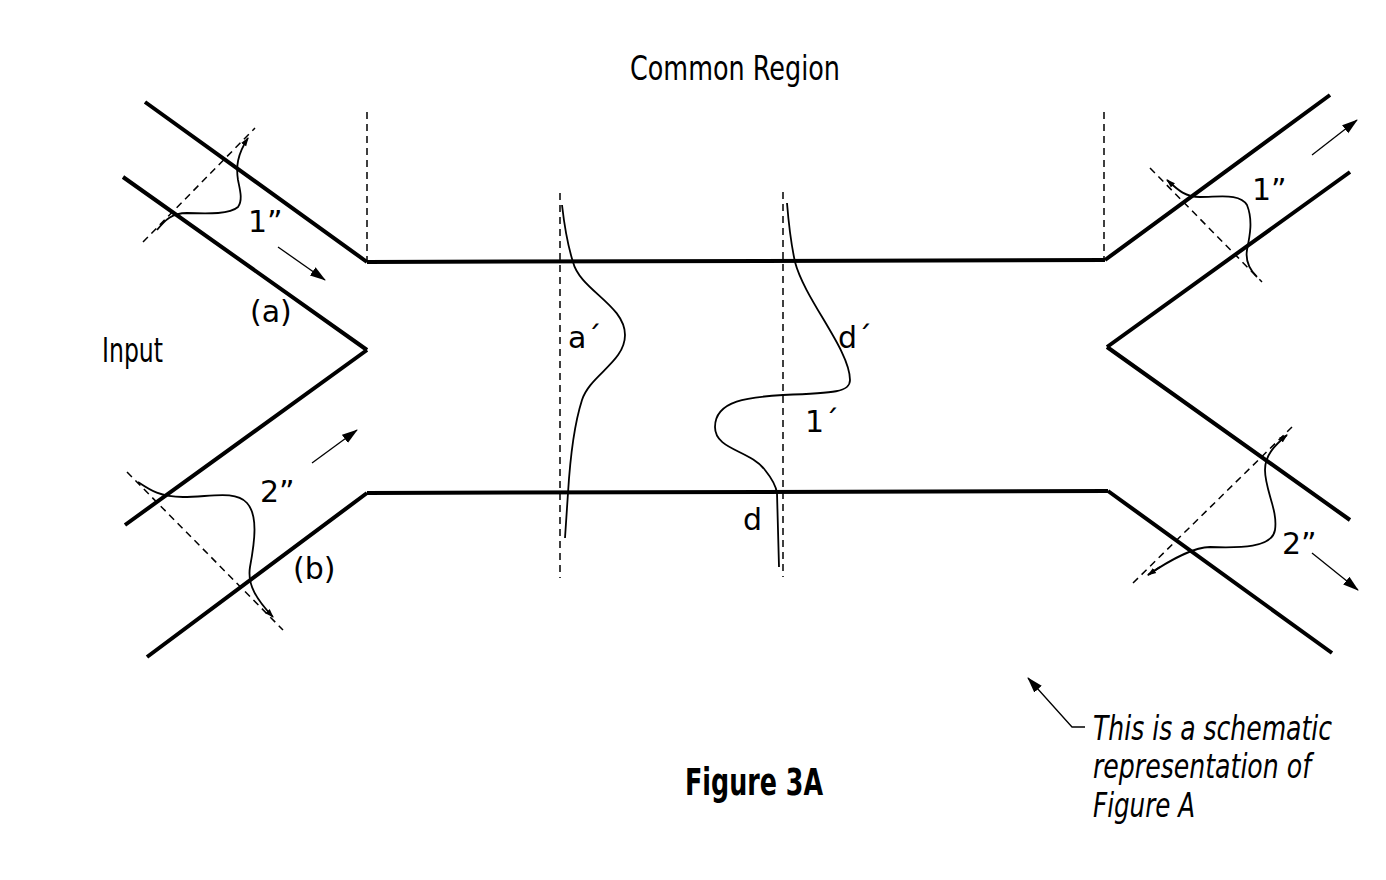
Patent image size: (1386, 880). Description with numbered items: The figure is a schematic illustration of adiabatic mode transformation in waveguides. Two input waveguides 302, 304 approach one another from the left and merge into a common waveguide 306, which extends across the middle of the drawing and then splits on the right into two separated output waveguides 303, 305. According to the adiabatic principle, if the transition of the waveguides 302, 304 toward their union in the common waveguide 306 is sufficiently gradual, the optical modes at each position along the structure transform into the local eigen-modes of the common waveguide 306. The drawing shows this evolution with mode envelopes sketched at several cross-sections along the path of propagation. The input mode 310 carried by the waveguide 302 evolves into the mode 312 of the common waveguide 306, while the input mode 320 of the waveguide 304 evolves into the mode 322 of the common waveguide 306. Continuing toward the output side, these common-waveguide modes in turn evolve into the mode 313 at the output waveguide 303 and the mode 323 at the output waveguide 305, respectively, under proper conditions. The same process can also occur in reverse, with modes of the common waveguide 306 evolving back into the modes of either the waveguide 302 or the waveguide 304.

The waveguide 302 is at (165, 112).
The waveguide 304 is at (165, 645).
The common waveguide 306 is at (878, 493).
The separated waveguide 303 is at (1312, 202).
The separated waveguide 305 is at (1305, 487).
The input mode 310 is at (235, 167).
The input mode 320 is at (262, 598).
The mode 313 is at (1187, 190).
The mode 323 is at (1180, 553).
The mode 322 is at (568, 500).
The mode 312 is at (778, 540).